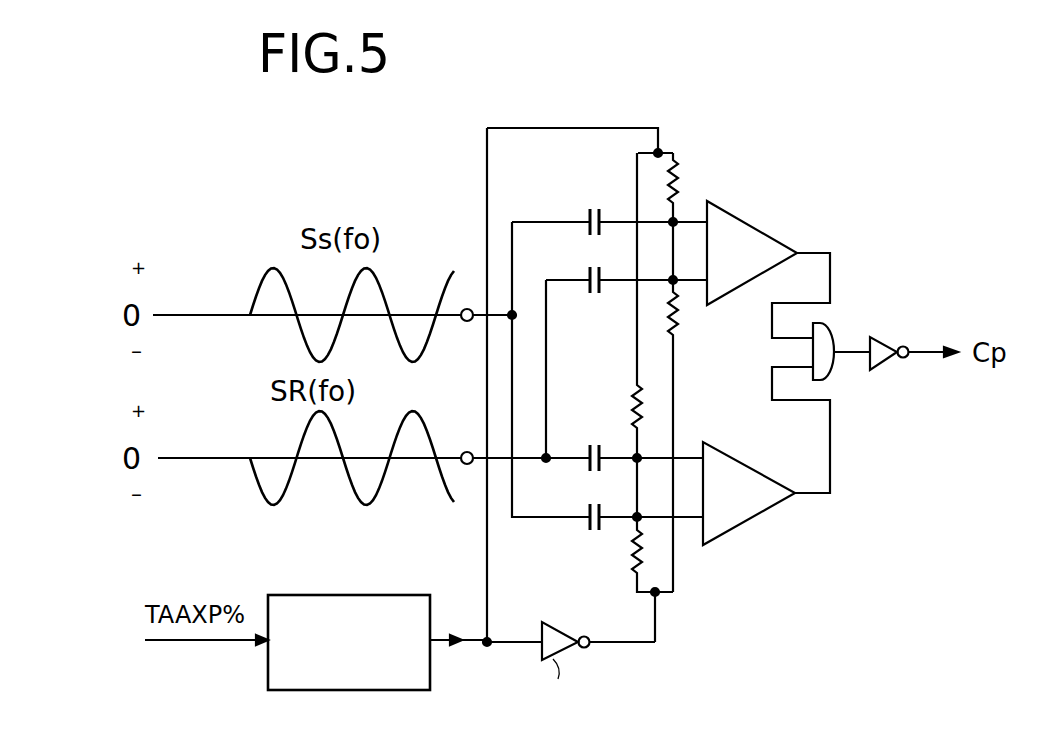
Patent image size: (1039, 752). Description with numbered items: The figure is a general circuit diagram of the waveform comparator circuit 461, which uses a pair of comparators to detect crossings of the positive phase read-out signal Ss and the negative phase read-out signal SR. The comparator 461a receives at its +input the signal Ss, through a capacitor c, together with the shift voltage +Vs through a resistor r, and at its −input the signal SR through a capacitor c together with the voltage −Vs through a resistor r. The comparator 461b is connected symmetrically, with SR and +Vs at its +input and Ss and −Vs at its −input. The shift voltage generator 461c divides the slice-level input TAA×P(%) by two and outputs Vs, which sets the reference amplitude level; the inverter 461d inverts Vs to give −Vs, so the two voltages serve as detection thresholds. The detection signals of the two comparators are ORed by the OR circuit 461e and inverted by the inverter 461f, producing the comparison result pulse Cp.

The waveform comparator circuit 461 is at (594, 90).
The comparator 461a is at (752, 226).
The comparator 461b is at (742, 456).
The shift voltage generator 461c is at (367, 595).
The inverter 461d is at (556, 622).
The OR circuit 461e is at (820, 325).
The inverter 461f is at (885, 362).